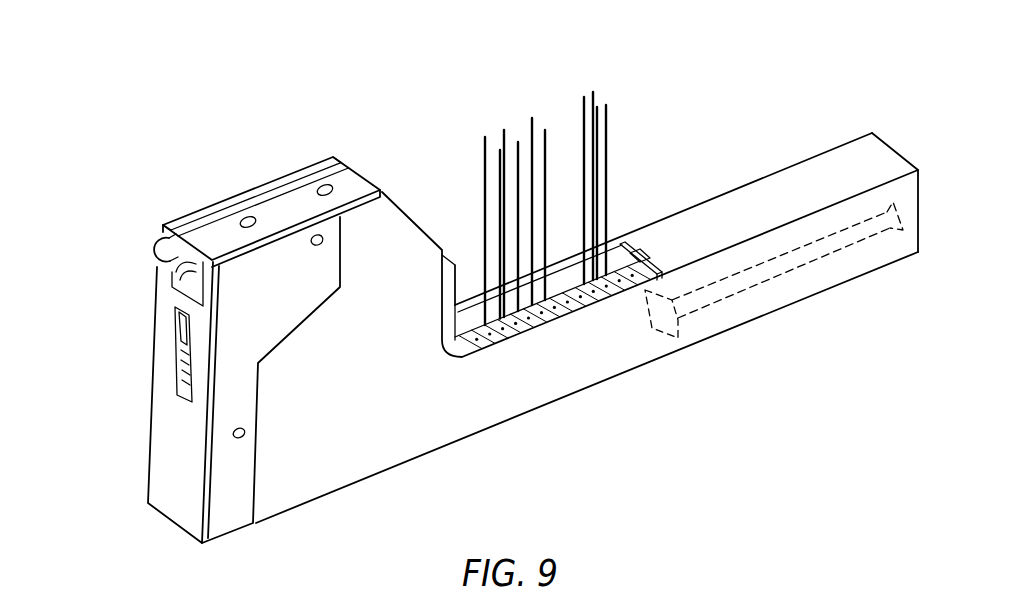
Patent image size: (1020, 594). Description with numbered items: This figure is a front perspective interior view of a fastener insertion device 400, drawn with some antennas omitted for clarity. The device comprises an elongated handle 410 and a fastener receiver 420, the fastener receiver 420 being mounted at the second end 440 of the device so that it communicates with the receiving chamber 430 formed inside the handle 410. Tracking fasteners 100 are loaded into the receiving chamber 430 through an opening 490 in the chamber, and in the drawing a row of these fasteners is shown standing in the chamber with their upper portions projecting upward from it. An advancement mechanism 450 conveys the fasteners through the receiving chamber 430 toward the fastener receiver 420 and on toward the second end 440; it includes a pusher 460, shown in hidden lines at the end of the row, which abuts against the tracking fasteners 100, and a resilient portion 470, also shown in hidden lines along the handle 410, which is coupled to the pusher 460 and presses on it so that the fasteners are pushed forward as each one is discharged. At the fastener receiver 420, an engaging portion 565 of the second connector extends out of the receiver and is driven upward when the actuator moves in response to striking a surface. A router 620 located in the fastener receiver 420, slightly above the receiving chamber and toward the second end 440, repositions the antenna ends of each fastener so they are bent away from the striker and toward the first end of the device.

The fastener insertion device 400 is at (383, 130).
The handle 410 is at (712, 197).
The fastener receiver 420 is at (231, 193).
The receiving chamber 430 is at (627, 268).
The second end 440 is at (150, 420).
The advancement mechanism 450 is at (737, 375).
The pusher 460 is at (670, 340).
The resilient portion 470 is at (761, 280).
The opening 490 is at (466, 268).
The tracking fasteners 100 is at (556, 284).
The engaging portion 565 is at (149, 258).
The router 620 is at (247, 436).